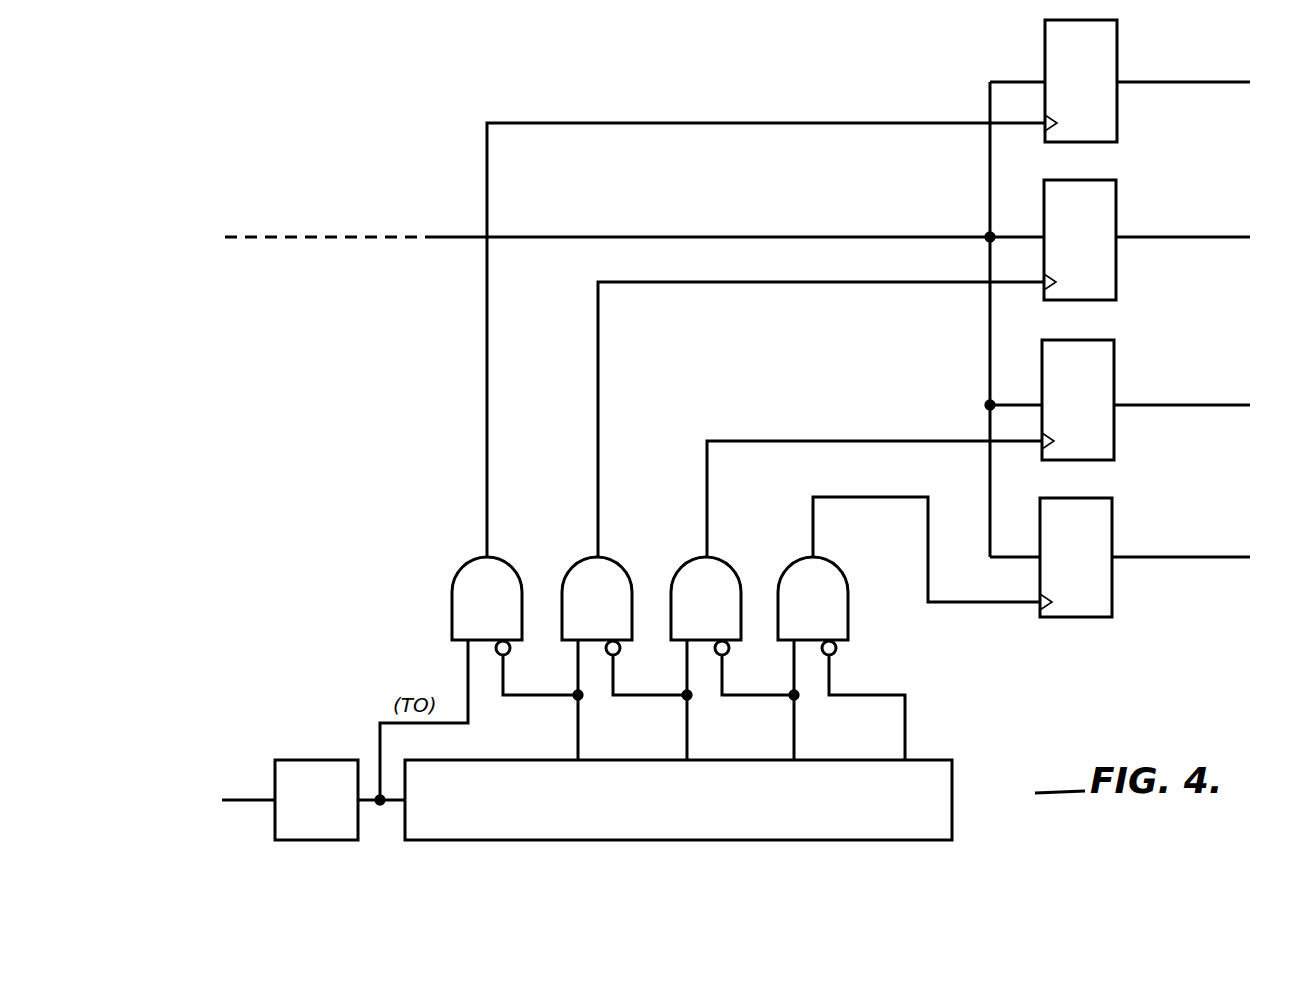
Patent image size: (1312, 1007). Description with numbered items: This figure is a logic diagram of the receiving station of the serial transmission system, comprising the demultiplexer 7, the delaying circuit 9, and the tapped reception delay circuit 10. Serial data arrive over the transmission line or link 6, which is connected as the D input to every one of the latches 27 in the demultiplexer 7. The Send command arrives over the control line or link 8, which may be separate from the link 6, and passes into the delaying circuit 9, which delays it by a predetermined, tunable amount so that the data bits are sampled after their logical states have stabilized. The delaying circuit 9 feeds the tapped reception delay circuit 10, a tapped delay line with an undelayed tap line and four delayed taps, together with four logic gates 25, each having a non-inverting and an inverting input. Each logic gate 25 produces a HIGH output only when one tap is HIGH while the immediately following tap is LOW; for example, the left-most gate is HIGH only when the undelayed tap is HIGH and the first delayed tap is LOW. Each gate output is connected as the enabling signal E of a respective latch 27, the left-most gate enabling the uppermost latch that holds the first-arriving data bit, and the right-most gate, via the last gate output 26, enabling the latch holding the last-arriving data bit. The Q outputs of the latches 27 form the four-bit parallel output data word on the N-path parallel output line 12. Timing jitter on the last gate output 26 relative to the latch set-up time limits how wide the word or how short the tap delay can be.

The transmission line or link 6 is at (338, 242).
The demultiplexer 7 is at (822, 67).
The control line or link 8 is at (242, 796).
The delaying circuit 9 is at (300, 760).
The tapped reception delay circuit 10 is at (953, 690).
The N-path parallel output line 12 is at (1178, 82).
The logic gates 25 is at (462, 566).
The last gate output 26 is at (856, 500).
The latches 27 is at (1045, 33).